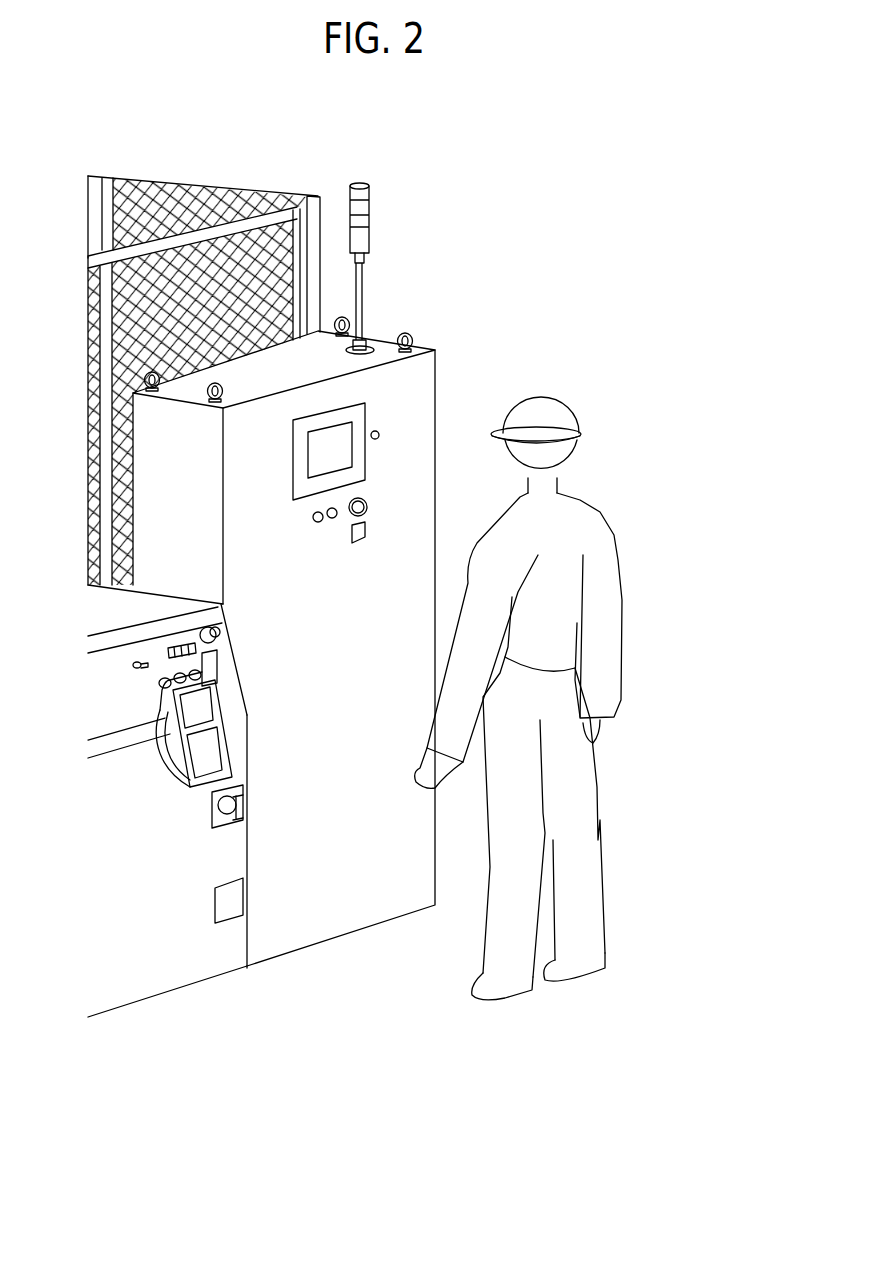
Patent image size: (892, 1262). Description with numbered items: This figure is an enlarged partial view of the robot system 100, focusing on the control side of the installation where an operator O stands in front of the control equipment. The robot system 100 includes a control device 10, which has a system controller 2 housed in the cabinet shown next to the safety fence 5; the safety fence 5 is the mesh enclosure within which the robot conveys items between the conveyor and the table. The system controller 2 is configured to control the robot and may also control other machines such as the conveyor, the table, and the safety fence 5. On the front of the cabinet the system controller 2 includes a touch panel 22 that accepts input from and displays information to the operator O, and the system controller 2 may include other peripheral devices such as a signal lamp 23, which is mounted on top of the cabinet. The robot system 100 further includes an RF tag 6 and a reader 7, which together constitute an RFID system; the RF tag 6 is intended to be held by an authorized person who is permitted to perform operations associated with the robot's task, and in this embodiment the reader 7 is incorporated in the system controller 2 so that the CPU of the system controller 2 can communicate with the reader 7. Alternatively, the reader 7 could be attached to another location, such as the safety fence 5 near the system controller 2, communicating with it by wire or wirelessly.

The system controller 2 is at (195, 968).
The safety fence 5 is at (312, 252).
The RF tag 6 is at (393, 880).
The reader 7 is at (365, 533).
The control device 10 is at (400, 317).
The touch panel 22 is at (345, 427).
The signal lamp 23 is at (365, 207).
The robot system 100 is at (630, 226).
The operator O is at (556, 420).